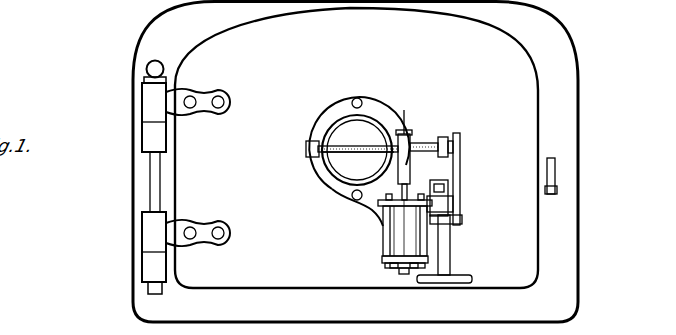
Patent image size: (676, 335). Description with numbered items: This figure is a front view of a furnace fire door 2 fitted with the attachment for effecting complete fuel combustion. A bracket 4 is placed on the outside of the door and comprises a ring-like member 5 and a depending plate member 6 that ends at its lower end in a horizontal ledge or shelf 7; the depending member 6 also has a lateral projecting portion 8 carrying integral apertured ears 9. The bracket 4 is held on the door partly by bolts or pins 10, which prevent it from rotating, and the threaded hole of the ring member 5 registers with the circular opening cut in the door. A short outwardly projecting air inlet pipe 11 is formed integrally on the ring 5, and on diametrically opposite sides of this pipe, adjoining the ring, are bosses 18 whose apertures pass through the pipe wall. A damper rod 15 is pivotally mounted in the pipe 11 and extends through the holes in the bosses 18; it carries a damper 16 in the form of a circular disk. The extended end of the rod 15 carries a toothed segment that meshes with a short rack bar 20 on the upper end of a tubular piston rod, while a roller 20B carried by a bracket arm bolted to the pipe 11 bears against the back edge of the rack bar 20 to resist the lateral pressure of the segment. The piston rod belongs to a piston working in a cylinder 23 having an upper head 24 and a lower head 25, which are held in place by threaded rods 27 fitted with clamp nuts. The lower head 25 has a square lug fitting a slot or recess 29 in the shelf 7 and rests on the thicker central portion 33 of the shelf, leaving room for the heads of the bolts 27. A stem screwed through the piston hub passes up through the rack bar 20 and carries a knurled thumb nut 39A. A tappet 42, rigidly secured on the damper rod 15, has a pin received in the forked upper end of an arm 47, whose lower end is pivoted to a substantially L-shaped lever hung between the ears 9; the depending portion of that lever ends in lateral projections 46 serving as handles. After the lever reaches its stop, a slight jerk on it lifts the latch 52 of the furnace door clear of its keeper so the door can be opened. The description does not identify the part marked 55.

The fire door 2 is at (356, 148).
The bracket 4 is at (348, 204).
The ring-like member 5 is at (384, 111).
The depending plate member 6 is at (382, 238).
The horizontal ledge or shelf 7 is at (388, 264).
The lateral projecting portion 8 is at (455, 221).
The apertured ears 9 is at (448, 188).
The bolts or pins 10 is at (358, 98).
The outwardly projecting pipe 11 is at (318, 138).
The damper rod 15 is at (342, 153).
The damper 16 is at (340, 146).
The bosses 18 is at (312, 164).
The rack bar 20 is at (406, 136).
The roller 20B is at (420, 144).
The cylinder 23 is at (400, 242).
The upper head 24 is at (452, 202).
The lower head 25 is at (380, 259).
The threaded rods 27 is at (385, 226).
The slot or recess 29 is at (390, 270).
The central portion of shelf 33 is at (410, 275).
The knurled thumb nut 39A is at (405, 132).
The tappet 42 is at (456, 133).
The lateral projections 46 is at (462, 279).
The arm 47 is at (458, 160).
The latch 52 is at (551, 160).
The latch catch 55 is at (553, 196).